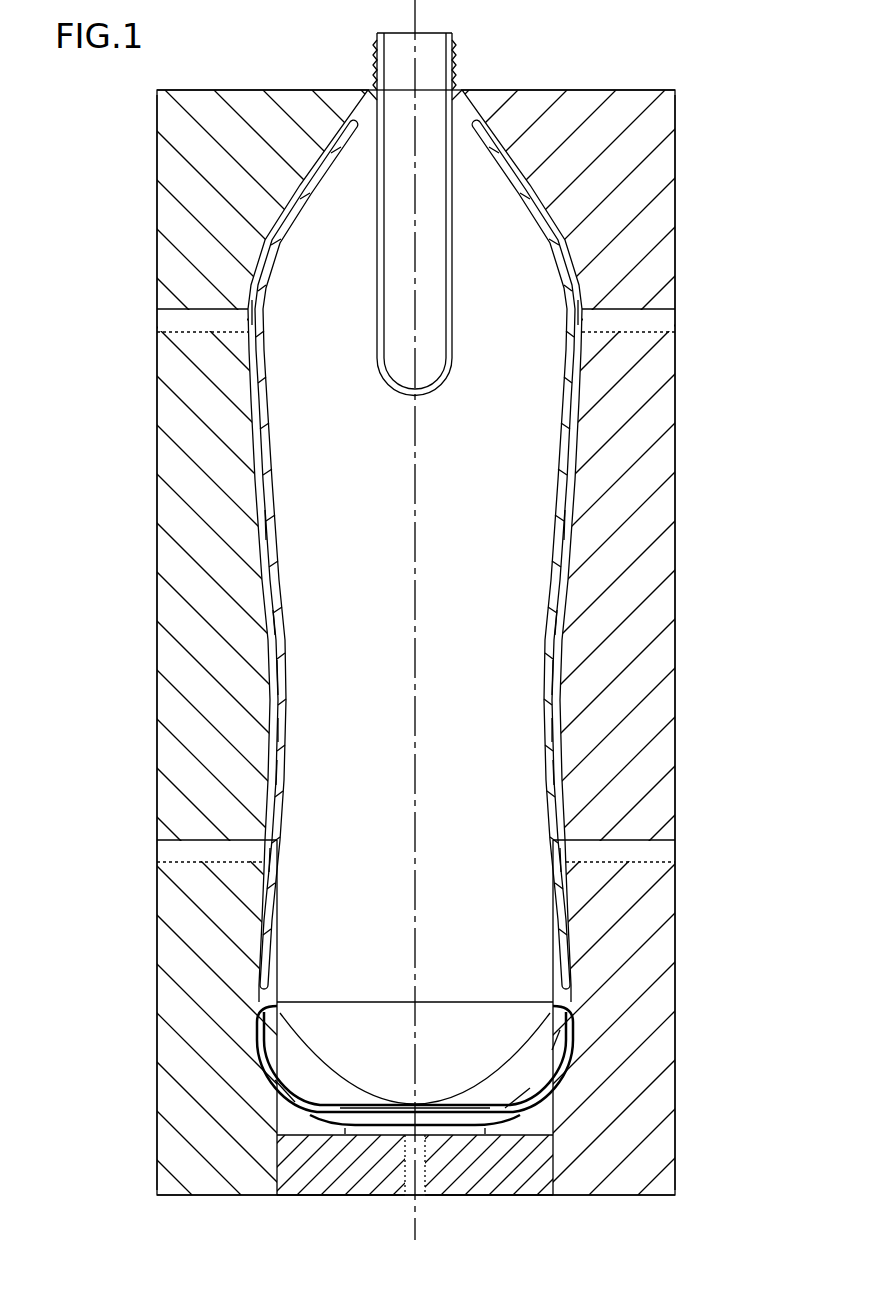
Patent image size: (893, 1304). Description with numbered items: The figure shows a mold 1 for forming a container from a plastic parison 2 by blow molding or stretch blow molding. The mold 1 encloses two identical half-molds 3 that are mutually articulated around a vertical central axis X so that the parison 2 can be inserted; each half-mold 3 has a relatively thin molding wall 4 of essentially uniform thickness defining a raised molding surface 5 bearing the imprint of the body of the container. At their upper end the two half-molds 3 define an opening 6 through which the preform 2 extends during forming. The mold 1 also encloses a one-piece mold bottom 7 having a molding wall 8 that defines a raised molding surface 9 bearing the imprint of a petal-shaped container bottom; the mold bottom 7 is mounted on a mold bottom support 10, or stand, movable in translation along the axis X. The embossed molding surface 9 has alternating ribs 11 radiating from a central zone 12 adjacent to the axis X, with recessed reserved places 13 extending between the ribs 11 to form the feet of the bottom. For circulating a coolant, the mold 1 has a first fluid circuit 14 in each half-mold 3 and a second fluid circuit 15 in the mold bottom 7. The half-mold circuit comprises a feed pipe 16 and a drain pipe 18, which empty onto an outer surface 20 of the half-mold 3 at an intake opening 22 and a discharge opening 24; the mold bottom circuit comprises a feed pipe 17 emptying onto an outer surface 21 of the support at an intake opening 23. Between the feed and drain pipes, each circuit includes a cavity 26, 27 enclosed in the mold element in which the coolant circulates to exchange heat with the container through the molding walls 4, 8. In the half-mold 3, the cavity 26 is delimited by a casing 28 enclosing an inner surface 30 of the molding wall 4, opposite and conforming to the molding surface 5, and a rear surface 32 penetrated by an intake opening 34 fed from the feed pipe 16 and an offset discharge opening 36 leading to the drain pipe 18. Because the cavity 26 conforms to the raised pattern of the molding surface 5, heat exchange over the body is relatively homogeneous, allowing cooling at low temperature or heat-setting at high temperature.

The mold 1 is at (713, 404).
The parison 2 is at (452, 300).
The half-mold 3 is at (172, 165).
The molding wall 4 is at (273, 474).
The molding surface 5 is at (286, 524).
The opening 6 is at (458, 100).
The mold bottom 7 is at (548, 1103).
The molding wall 8 is at (300, 1106).
The molding surface 9 is at (548, 1040).
The mold bottom support 10 is at (497, 1180).
The rib 11 is at (318, 1055).
The central zone 12 is at (420, 1097).
The recessed reserved place 13 is at (514, 1102).
The first fluid circuit 14 is at (195, 305).
The second fluid circuit 15 is at (402, 1177).
The feed pipe 16 is at (220, 325).
The feed pipe 17 is at (428, 1172).
The drain pipe 18 is at (195, 852).
The outer surface 20 is at (158, 540).
The outer surface 21 is at (338, 1198).
The intake opening 22 is at (158, 312).
The intake opening 23 is at (405, 1198).
The discharge opening 24 is at (158, 845).
The cavity 26 is at (282, 622).
The cavity 27 is at (345, 1115).
The casing 28 is at (279, 690).
The inner surface 30 is at (274, 730).
The rear surface 32 is at (283, 772).
The intake opening 34 is at (261, 314).
The discharge opening 36 is at (278, 860).
The central axis X is at (420, 812).